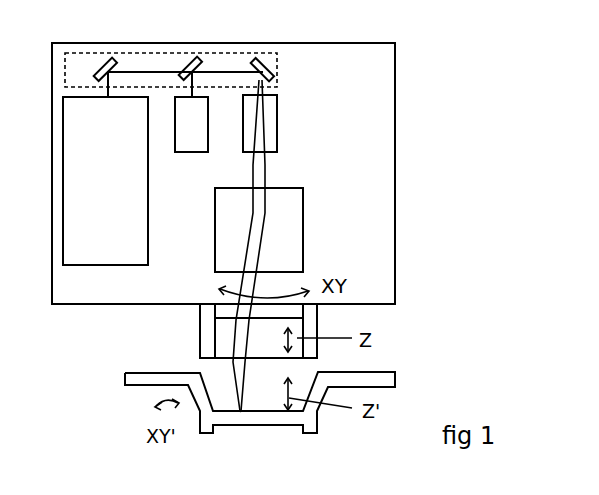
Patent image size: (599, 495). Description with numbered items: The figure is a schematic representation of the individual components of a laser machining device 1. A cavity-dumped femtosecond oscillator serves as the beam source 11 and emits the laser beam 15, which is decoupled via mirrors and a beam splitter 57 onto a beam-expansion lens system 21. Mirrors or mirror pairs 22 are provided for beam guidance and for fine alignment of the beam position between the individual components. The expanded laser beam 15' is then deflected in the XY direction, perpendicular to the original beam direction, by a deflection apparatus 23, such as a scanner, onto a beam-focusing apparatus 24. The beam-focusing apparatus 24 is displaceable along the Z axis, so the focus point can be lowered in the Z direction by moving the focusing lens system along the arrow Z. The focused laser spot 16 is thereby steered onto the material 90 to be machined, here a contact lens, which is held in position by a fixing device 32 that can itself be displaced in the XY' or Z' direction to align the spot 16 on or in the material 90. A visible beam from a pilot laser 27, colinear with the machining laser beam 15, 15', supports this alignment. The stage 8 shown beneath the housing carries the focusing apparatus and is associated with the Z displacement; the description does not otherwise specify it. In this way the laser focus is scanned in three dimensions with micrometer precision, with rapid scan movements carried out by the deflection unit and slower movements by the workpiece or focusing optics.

The machining device 1 is at (392, 64).
The positioning stage 8 is at (310, 318).
The beam source 11 is at (105, 168).
The laser beam 15 is at (178, 44).
The expanded laser beam 15' is at (292, 245).
The focused laser spot 16 is at (241, 410).
The beam-expansion lens system 21 is at (265, 117).
The mirrors 22 is at (264, 60).
The deflection apparatus 23 is at (260, 230).
The beam-focusing apparatus 24 is at (258, 340).
The pilot laser 27 is at (190, 124).
The fixing device 32 is at (280, 400).
The beam splitter 57 is at (203, 67).
The material 90 is at (250, 425).